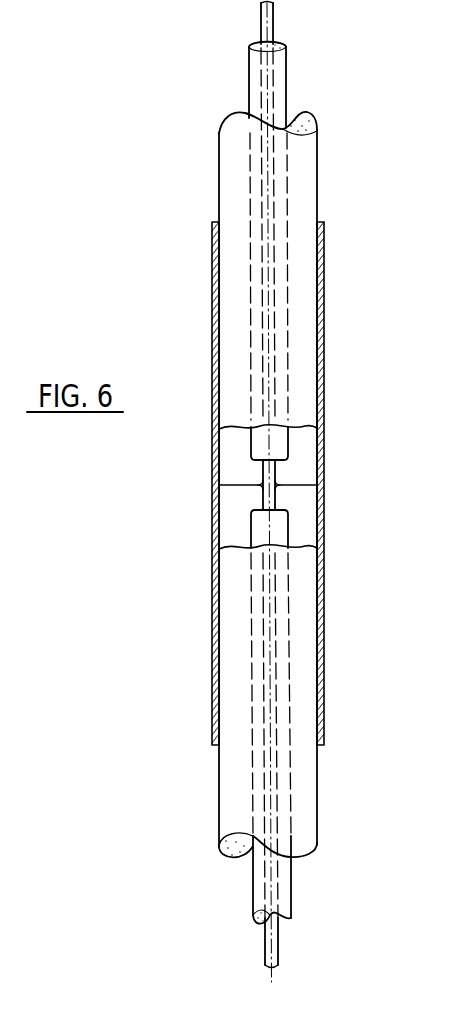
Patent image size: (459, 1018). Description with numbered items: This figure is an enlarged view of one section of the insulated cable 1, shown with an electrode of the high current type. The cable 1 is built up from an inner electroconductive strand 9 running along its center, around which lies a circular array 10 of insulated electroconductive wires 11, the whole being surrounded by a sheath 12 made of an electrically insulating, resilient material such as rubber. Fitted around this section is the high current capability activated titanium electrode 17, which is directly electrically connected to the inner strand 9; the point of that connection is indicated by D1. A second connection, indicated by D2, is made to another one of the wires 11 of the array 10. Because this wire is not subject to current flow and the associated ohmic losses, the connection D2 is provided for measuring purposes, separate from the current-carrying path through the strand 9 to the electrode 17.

The insulated cable 1 is at (306, 491).
The inner electroconductive strand 9 is at (273, 16).
The circular array 10 is at (286, 79).
The insulated electroconductive wires 11 is at (316, 340).
The sheath 12 is at (302, 171).
The activated titanium electrode 17 is at (324, 612).
The connection point D1 is at (296, 502).
The second connection D2 is at (298, 357).